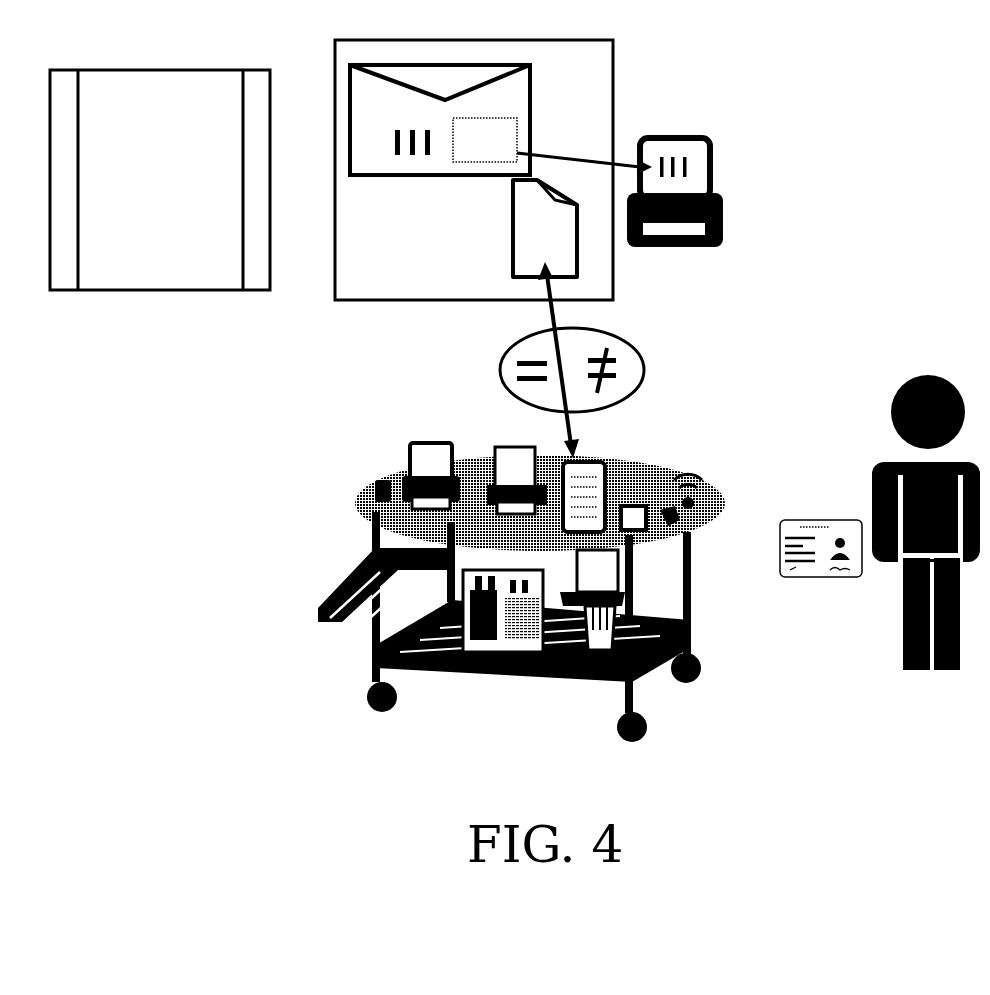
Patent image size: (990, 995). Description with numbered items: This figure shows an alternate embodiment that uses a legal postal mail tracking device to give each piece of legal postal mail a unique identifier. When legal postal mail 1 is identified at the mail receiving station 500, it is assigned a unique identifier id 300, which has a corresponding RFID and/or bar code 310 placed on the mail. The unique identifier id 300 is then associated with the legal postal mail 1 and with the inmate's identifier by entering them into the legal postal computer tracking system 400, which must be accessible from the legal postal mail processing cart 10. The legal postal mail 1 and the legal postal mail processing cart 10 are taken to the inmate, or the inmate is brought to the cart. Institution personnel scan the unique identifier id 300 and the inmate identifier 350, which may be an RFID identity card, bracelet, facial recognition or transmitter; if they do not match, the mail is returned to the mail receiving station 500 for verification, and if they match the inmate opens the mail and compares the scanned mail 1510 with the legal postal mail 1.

The legal postal mail 1 is at (476, 218).
The legal postal mail processing cart 10 is at (495, 583).
The unique identifier id 300 is at (485, 140).
The RFID and/or bar code 310 is at (413, 163).
The inmate identifier 350 is at (797, 590).
The legal postal computer tracking system 400 is at (678, 135).
The mail receiving station 500 is at (160, 180).
The scanned mail 1510 is at (597, 493).